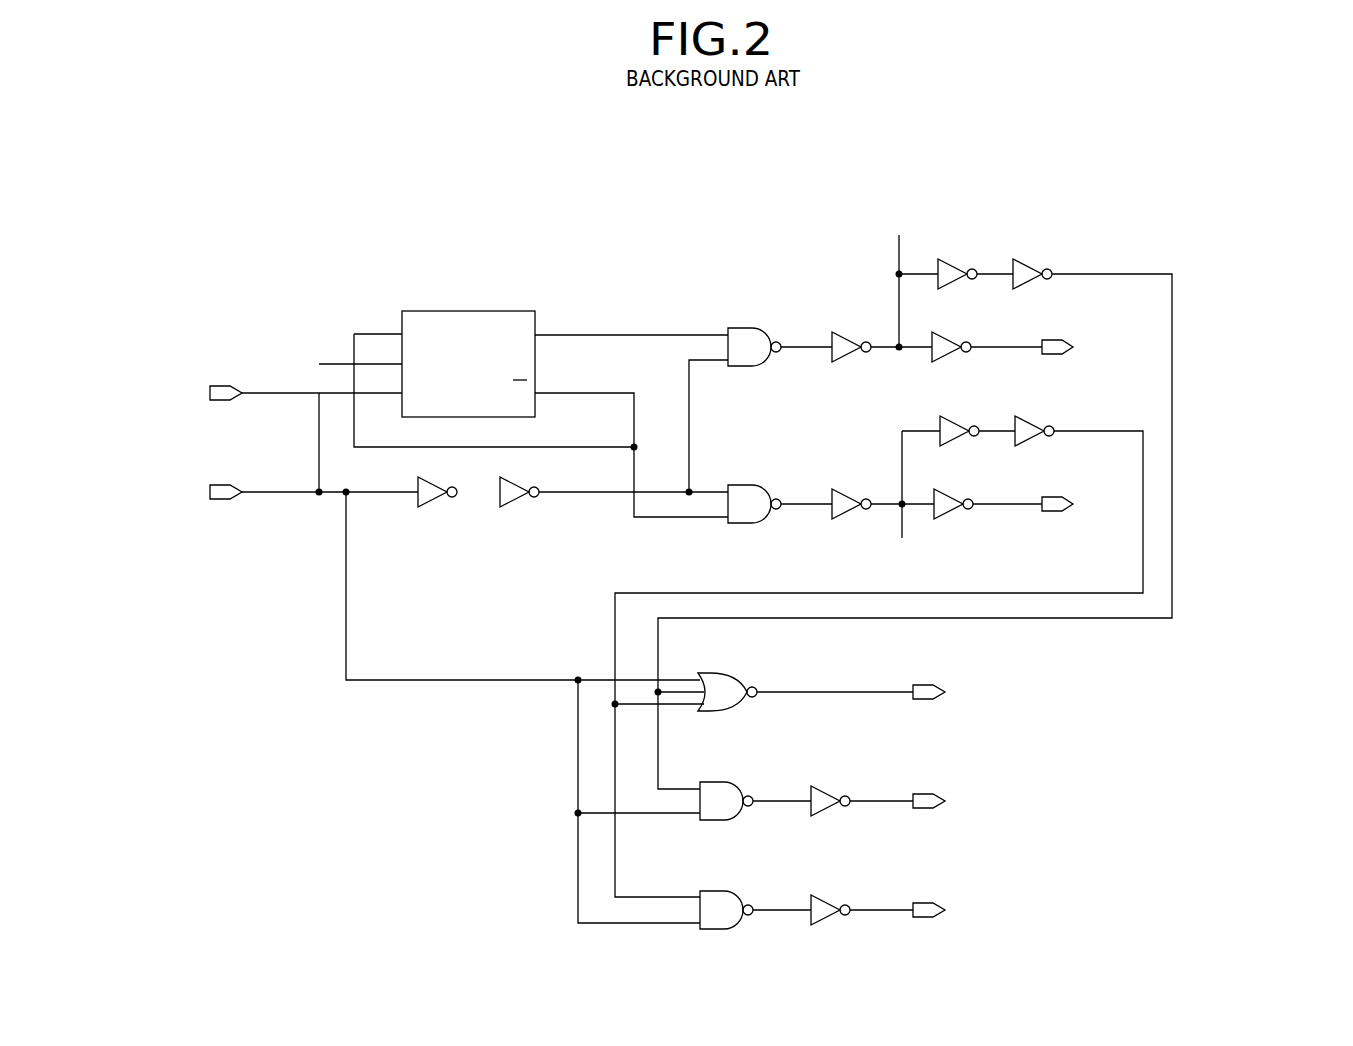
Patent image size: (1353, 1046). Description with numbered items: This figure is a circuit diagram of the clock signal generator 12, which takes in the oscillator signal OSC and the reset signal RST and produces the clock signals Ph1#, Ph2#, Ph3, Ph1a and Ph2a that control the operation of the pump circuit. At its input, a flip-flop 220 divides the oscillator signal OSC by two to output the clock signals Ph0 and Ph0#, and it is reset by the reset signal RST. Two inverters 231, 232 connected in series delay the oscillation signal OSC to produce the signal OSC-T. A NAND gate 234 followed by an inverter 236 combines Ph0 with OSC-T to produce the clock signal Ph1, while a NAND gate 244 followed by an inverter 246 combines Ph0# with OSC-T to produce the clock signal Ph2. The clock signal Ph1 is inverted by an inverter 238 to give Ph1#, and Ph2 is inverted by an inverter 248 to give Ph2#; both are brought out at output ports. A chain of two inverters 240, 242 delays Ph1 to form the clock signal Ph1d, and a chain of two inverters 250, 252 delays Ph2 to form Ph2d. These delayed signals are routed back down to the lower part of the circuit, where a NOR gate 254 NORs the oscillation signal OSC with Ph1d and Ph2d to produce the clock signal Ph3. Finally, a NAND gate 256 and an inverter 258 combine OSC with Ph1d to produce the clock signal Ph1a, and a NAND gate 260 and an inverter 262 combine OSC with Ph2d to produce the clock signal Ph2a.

The clock signal generator 12 is at (1237, 238).
The flip-flop 220 is at (467, 311).
The inverter 231 is at (438, 507).
The inverter 232 is at (521, 507).
The NAND gate 234 is at (749, 328).
The inverter 236 is at (845, 335).
The inverter 238 is at (948, 338).
The inverter 240 is at (952, 262).
The inverter 242 is at (1027, 262).
The NAND gate 244 is at (751, 485).
The inverter 246 is at (847, 492).
The inverter 248 is at (950, 495).
The inverter 250 is at (954, 420).
The inverter 252 is at (1028, 420).
The NOR gate 254 is at (741, 678).
The NAND gate 256 is at (717, 782).
The inverter 258 is at (827, 794).
The NAND gate 260 is at (719, 891).
The inverter 262 is at (827, 903).